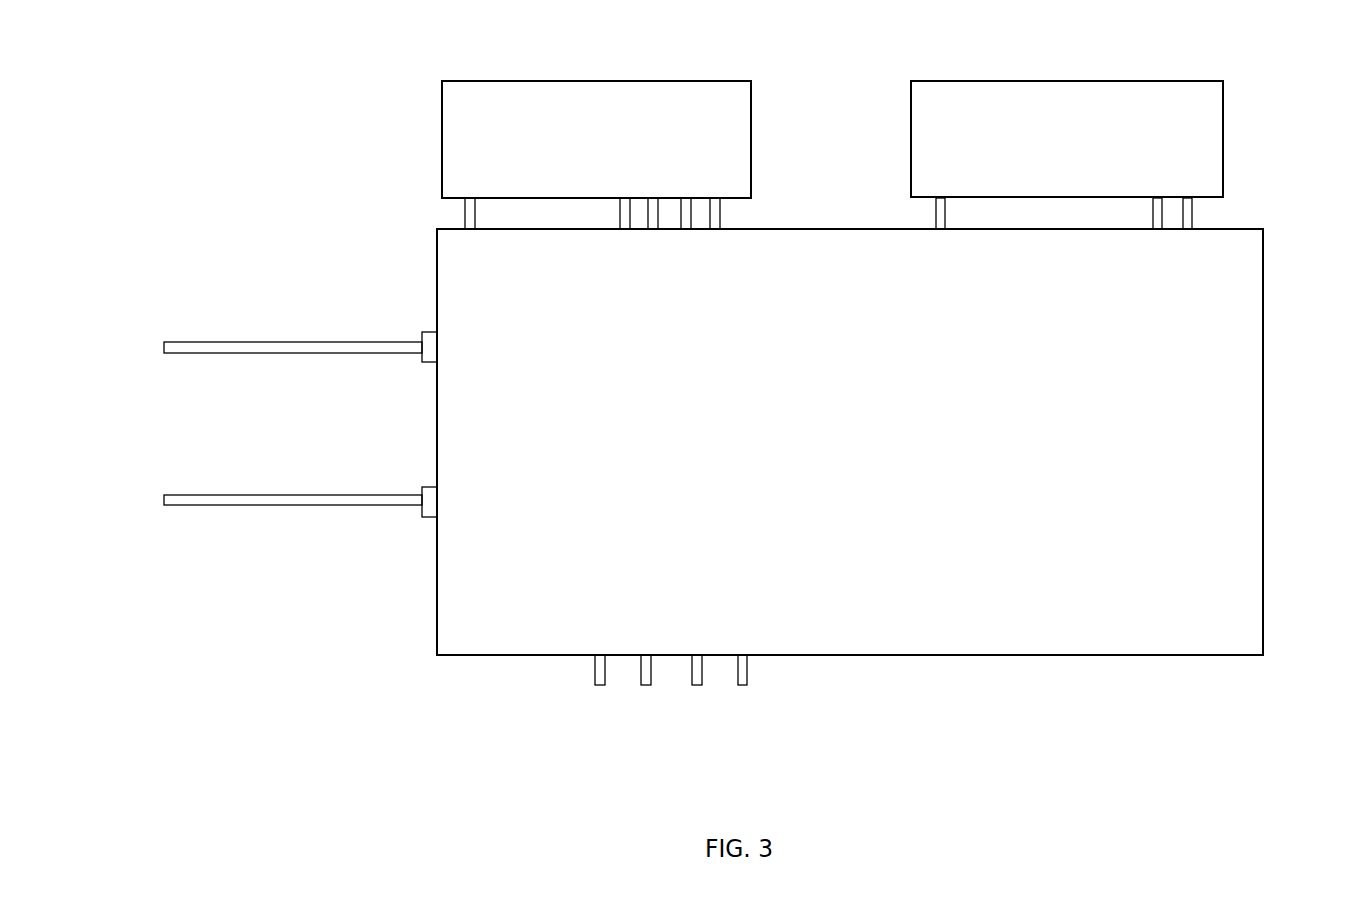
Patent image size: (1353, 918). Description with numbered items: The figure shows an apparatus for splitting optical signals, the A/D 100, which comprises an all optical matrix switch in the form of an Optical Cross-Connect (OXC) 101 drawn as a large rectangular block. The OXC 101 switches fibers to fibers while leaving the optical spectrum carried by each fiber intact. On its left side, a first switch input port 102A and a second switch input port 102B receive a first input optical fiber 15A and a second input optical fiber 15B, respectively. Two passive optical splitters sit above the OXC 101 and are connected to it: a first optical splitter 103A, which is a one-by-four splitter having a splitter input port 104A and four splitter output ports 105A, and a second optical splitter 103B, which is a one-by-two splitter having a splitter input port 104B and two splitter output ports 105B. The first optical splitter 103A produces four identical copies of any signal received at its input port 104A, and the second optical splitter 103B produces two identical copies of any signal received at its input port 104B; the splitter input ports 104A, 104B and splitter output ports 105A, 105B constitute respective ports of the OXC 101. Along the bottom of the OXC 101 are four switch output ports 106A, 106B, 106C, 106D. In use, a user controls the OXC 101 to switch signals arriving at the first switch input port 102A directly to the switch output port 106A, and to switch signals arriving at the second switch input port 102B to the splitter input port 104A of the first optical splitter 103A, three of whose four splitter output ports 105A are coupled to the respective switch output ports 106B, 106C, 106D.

The A/D 100 is at (1255, 663).
The Optical Cross-Connect (OXC) 101 is at (1030, 655).
The first input optical fiber 15A is at (230, 345).
The second input optical fiber 15B is at (235, 495).
The first switch input port 102A is at (423, 335).
The second switch input port 102B is at (423, 508).
The first optical splitter 103A is at (751, 100).
The second optical splitter 103B is at (1223, 100).
The splitter input port 104A is at (466, 220).
The splitter input port 104B is at (937, 218).
The splitter output ports 105A is at (717, 230).
The splitter output ports 105B is at (1188, 230).
The switch output port 106A is at (593, 672).
The switch output port 106B is at (643, 670).
The switch output port 106C is at (688, 672).
The switch output port 106D is at (735, 672).